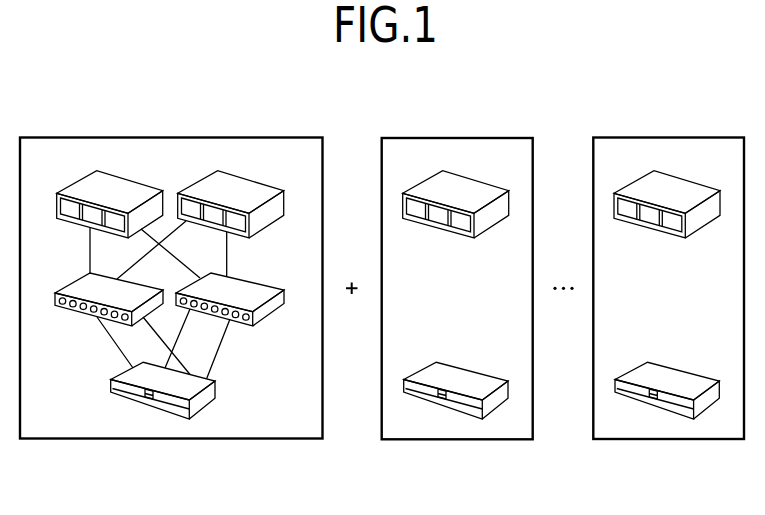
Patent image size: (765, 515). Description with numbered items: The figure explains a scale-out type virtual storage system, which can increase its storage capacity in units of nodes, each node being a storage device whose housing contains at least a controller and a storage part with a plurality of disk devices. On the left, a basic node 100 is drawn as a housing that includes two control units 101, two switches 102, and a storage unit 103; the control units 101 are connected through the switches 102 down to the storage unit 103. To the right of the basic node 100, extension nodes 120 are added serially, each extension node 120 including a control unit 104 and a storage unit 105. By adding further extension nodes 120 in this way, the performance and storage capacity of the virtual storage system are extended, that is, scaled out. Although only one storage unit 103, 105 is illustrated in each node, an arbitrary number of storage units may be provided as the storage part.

The basic node 100 is at (257, 121).
The control unit 101 is at (137, 164).
The switch 102 is at (68, 285).
The storage unit 103 is at (217, 390).
The extension node 120 is at (458, 137).
The control unit 104 is at (473, 181).
The storage unit 105 is at (476, 372).